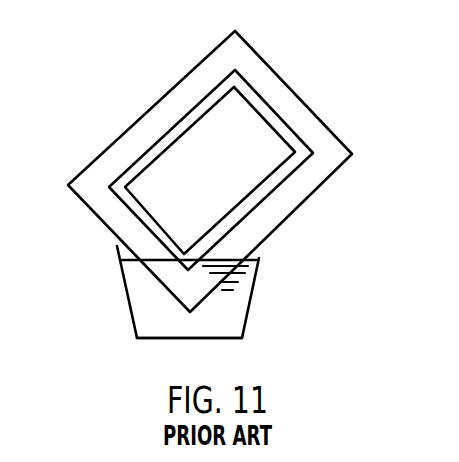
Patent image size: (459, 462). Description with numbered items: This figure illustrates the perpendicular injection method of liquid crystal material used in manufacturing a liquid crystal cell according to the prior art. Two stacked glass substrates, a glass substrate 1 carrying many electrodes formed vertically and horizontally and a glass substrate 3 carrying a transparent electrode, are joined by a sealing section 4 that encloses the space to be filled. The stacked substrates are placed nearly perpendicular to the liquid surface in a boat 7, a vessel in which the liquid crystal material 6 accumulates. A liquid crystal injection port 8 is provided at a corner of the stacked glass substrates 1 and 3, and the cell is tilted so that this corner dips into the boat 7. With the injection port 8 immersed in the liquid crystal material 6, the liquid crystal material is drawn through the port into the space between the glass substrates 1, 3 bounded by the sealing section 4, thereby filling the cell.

The glass substrate 1 is at (313, 110).
The glass substrate 3 is at (260, 90).
The sealing section 4 is at (287, 143).
The liquid crystal material 6 is at (147, 283).
The boat 7 is at (130, 325).
The liquid crystal injection port 8 is at (190, 257).